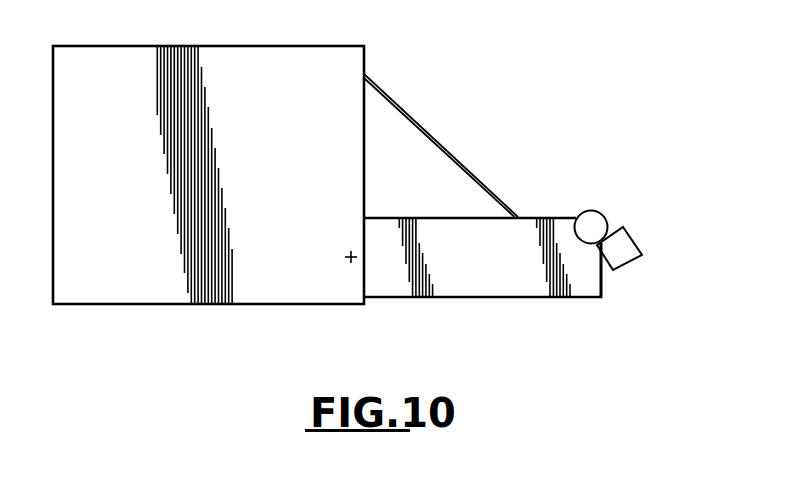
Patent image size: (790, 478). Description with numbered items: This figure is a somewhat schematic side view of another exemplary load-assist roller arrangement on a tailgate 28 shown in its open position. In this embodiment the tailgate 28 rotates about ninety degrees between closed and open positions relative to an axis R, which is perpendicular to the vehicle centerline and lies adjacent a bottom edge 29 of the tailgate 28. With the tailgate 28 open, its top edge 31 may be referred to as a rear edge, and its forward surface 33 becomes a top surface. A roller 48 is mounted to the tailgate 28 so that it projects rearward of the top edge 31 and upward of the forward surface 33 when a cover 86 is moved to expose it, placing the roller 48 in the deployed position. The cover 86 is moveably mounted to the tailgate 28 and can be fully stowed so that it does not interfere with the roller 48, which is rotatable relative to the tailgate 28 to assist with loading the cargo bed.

The tailgate 28 is at (523, 308).
The bottom edge 29 is at (364, 269).
The top edge 31 is at (603, 283).
The forward surface 33 is at (438, 217).
The roller 48 is at (607, 214).
The cover 86 is at (620, 255).
The axis R is at (348, 261).